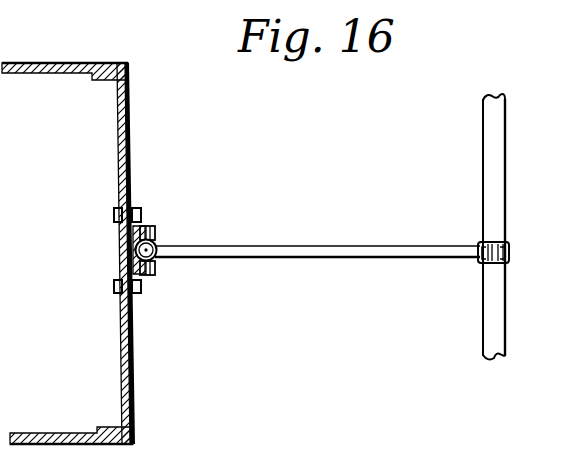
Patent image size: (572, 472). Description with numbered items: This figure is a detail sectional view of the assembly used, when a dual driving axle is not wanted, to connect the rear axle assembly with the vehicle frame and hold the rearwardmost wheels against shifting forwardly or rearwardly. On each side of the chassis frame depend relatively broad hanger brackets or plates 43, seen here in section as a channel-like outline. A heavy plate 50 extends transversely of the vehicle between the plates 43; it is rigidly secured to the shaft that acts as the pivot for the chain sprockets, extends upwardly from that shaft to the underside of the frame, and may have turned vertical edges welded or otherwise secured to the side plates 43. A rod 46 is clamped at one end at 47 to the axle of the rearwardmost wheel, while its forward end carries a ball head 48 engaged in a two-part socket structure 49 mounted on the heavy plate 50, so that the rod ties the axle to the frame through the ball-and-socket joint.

The hanger bracket 43 is at (72, 50).
The rod 46 is at (300, 260).
The clamp 47 is at (509, 258).
The ball head 48 is at (158, 248).
The two-part socket structure 49 is at (148, 232).
The heavy plate 50 is at (135, 360).